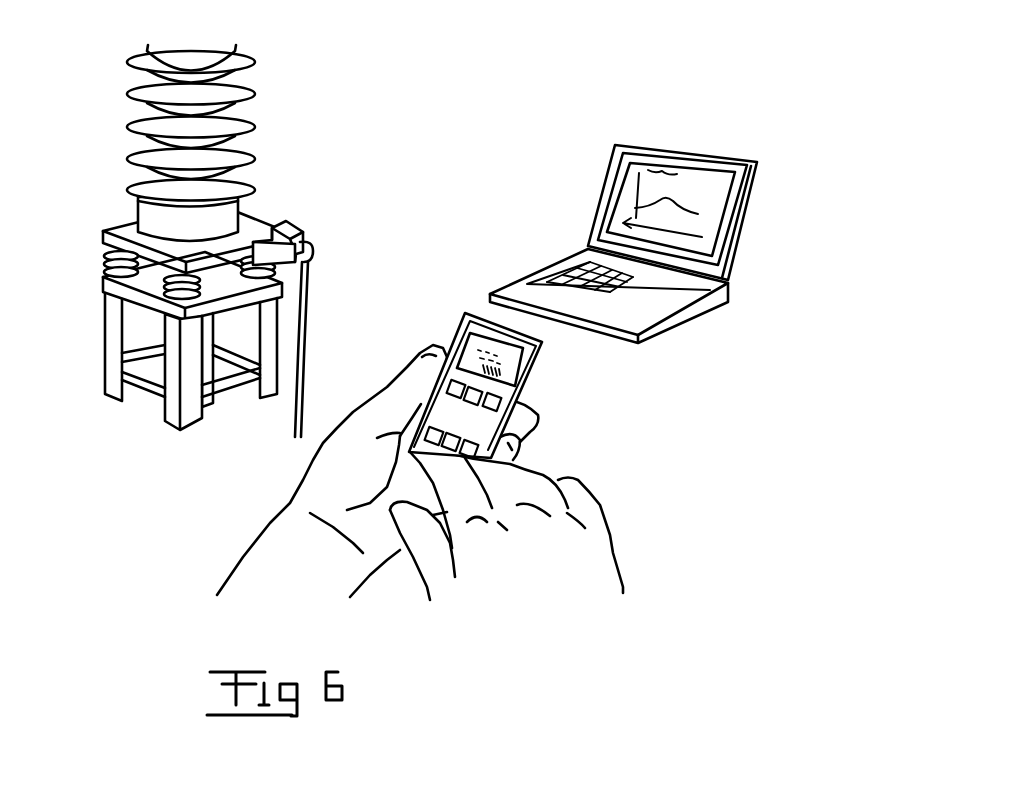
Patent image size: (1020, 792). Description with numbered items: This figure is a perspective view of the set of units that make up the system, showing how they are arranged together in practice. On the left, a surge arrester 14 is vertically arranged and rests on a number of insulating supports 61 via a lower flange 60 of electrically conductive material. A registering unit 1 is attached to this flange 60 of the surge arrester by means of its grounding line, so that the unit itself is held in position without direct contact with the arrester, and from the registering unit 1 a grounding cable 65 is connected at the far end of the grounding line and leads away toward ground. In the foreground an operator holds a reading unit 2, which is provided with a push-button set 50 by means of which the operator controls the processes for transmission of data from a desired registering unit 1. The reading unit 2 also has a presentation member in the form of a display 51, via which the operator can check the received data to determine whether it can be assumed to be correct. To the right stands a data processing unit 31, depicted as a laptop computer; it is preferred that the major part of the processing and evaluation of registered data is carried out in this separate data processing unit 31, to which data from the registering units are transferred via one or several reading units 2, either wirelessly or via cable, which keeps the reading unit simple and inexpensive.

The registering unit 1 is at (308, 214).
The reading unit 2 is at (521, 337).
The surge arrester 14 is at (274, 108).
The data processing unit 31 is at (668, 122).
The push-button set 50 is at (498, 397).
The display 51 is at (517, 363).
The lower flange 60 is at (130, 223).
The insulating supports 61 is at (108, 260).
The grounding cable 65 is at (308, 335).